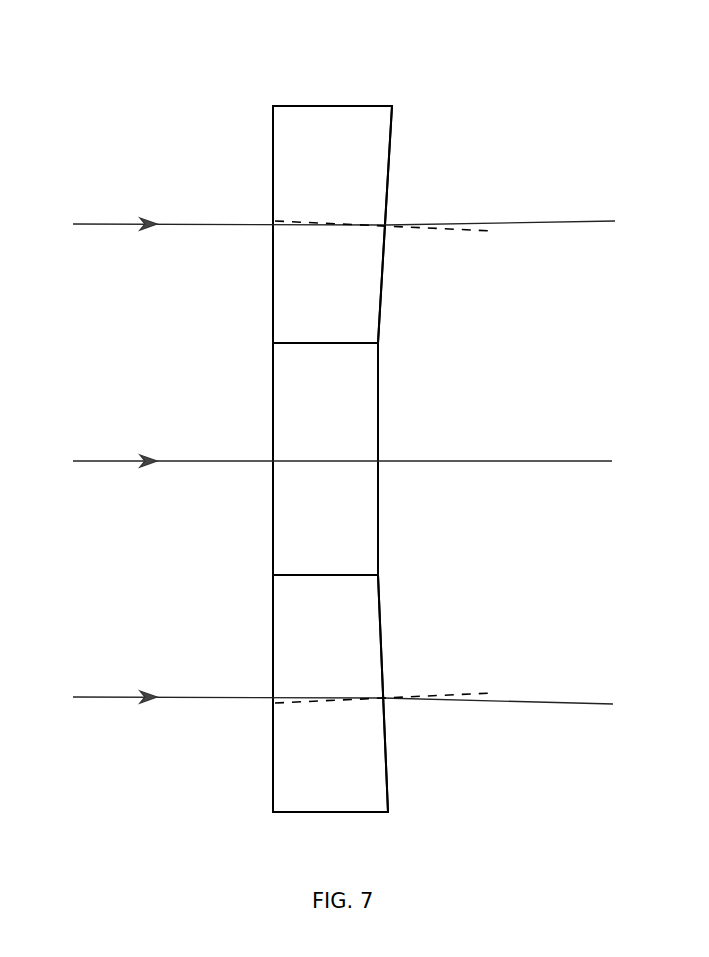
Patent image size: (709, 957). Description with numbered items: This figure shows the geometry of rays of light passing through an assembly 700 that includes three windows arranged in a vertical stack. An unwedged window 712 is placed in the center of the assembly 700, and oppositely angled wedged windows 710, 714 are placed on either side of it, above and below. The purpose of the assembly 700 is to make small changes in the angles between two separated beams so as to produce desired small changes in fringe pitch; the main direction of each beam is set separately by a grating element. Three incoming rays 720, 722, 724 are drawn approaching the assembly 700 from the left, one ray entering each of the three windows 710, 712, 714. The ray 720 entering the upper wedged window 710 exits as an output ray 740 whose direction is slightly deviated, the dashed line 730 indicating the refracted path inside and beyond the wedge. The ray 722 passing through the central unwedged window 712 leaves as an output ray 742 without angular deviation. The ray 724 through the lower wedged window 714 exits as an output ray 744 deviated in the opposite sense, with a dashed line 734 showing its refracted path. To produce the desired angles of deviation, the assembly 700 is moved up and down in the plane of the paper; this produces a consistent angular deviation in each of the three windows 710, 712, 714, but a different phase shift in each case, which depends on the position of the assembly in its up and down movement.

The assembly 700 is at (278, 52).
The wedged window 710 is at (273, 166).
The unwedged window 712 is at (273, 388).
The wedged window 714 is at (273, 634).
The first input light beam 720 is at (116, 225).
The second input light beam 722 is at (116, 462).
The third input light beam 724 is at (116, 698).
The first deflected beam direction (dashed) 730 is at (472, 230).
The third deflected beam direction (dashed) 734 is at (470, 692).
The first output light beam 740 is at (590, 221).
The second output light beam 742 is at (588, 461).
The third output light beam 744 is at (588, 703).